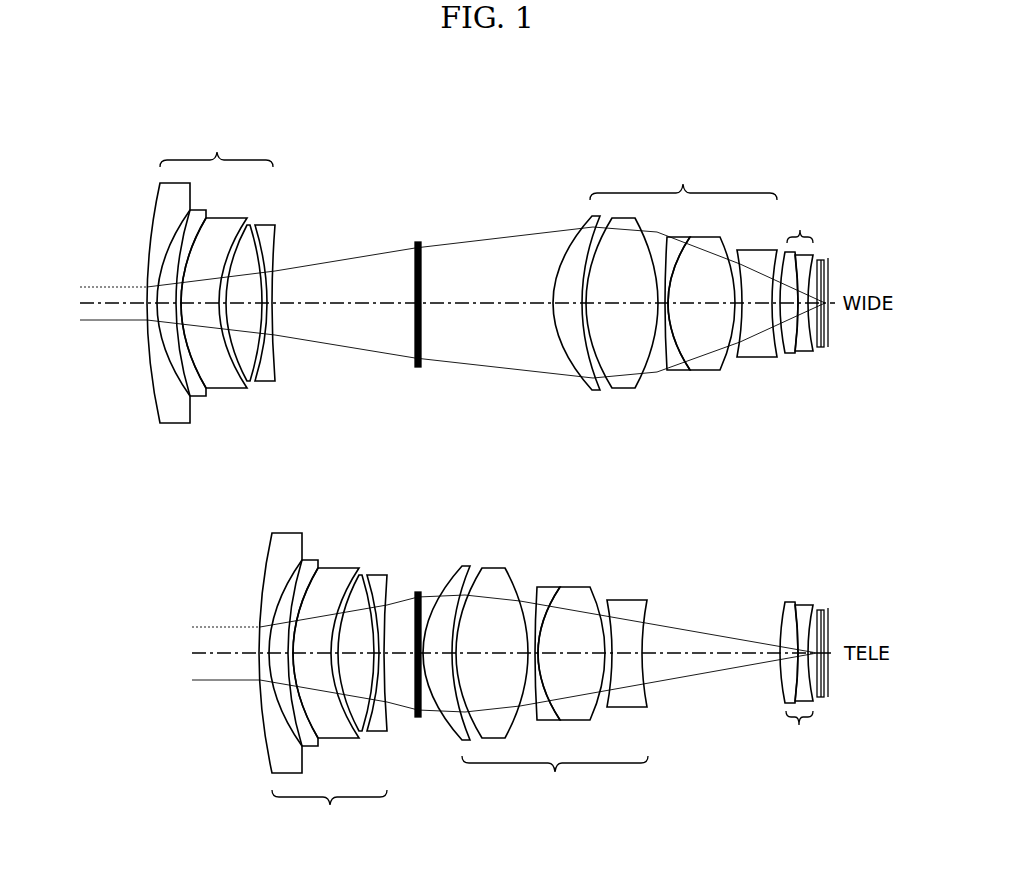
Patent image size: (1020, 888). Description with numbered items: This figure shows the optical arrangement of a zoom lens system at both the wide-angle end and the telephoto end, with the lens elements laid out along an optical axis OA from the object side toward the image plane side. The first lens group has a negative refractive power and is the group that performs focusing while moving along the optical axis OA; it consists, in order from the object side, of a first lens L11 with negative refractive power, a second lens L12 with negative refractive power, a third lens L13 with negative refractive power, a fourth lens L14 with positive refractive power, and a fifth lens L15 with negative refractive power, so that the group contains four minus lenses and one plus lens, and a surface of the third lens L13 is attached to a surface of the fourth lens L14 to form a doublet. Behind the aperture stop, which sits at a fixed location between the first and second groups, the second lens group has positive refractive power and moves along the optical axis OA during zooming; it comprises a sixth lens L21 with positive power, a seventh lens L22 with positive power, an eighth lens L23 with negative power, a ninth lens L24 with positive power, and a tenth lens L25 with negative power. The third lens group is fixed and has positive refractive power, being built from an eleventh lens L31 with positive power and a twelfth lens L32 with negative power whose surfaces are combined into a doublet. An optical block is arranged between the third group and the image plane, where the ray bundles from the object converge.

The optical axis OA is at (110, 300).
The first lens L11 is at (172, 415).
The second lens L12 is at (198, 388).
The third lens L13 is at (225, 380).
The fourth lens L14 is at (247, 377).
The fifth lens L15 is at (268, 373).
The sixth lens L21 is at (583, 372).
The seventh lens L22 is at (623, 380).
The eighth lens L23 is at (678, 367).
The ninth lens L24 is at (713, 363).
The tenth lens L25 is at (753, 352).
The eleventh lens L31 is at (790, 353).
The twelfth lens L32 is at (807, 352).